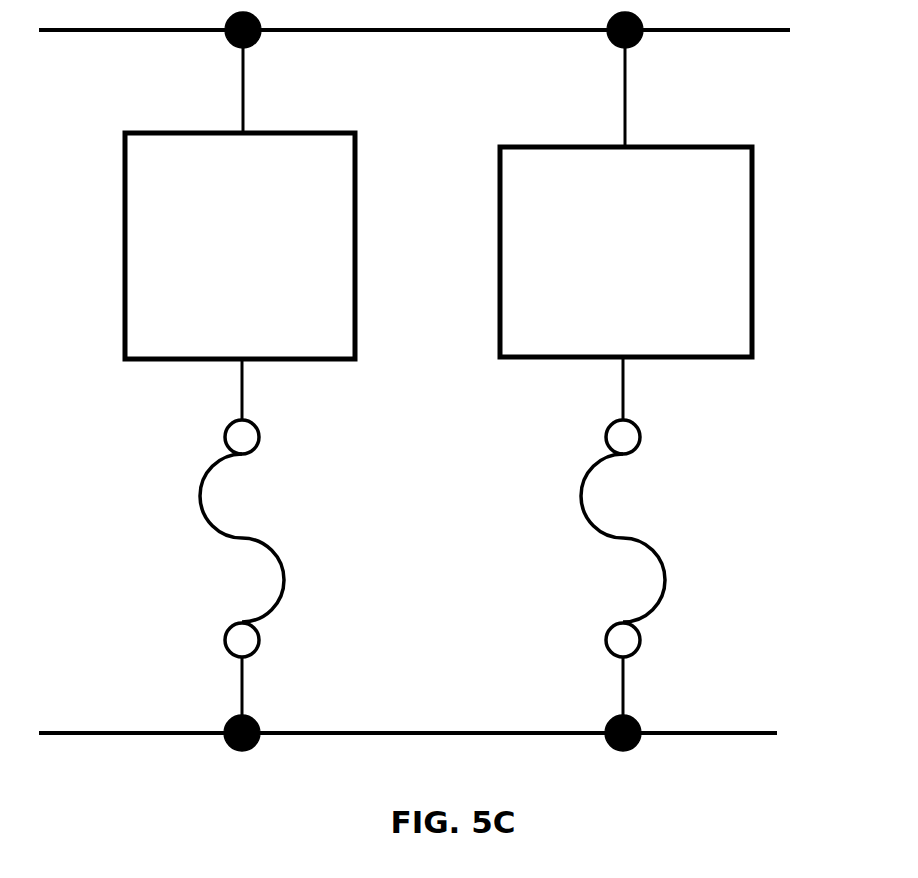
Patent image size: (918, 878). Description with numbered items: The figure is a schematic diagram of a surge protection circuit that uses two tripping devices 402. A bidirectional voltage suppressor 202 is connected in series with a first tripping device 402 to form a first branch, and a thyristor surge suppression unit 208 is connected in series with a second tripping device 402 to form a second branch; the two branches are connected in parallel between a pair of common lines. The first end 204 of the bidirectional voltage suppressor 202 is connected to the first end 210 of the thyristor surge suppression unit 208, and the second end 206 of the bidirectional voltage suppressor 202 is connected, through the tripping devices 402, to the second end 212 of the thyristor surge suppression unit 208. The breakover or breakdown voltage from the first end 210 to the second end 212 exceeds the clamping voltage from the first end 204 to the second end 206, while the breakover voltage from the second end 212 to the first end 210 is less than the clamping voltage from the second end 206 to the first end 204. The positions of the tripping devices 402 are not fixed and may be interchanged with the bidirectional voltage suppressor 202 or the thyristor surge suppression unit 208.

The bidirectional voltage suppressor 202 is at (355, 252).
The first end of the bidirectional voltage suppressor 204 is at (243, 66).
The second end of the bidirectional voltage suppressor 206 is at (242, 377).
The thyristor surge suppression unit 208 is at (752, 210).
The first end of the thyristor surge suppression unit 210 is at (626, 73).
The second end of the thyristor surge suppression unit 212 is at (626, 377).
The tripping device 402 is at (282, 568).